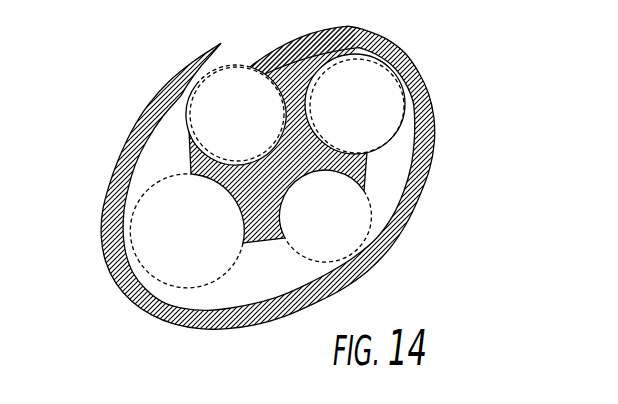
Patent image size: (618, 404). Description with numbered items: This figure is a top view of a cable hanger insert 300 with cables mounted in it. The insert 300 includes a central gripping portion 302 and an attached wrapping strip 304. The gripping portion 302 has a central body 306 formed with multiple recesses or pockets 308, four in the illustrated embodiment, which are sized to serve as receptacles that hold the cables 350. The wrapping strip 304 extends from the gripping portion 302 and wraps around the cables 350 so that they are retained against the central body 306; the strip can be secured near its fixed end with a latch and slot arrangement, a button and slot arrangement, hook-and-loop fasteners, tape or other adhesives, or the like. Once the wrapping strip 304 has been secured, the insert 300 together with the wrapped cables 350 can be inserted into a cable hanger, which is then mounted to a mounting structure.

The cable hanger insert 300 is at (309, 202).
The central gripping portion 302 is at (250, 267).
The wrapping strip 304 is at (160, 312).
The central body 306 is at (327, 160).
The recesses or pockets 308 is at (230, 211).
The cables 350 is at (118, 283).